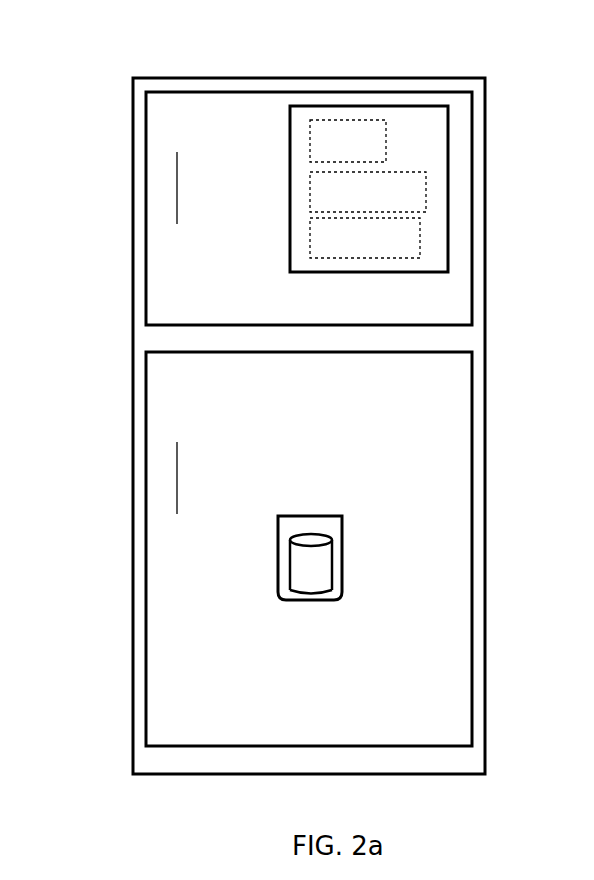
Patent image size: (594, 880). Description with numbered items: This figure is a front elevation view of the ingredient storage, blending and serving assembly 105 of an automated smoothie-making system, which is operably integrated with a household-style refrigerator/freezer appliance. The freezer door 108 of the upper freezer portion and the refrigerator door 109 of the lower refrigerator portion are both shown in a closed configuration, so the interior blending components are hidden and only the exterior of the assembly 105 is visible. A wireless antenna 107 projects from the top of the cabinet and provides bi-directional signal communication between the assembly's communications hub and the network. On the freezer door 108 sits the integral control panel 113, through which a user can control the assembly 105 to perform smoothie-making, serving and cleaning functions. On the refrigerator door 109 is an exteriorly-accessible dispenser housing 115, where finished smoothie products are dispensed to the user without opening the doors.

The ingredient storage, blending and serving assembly 105 is at (94, 54).
The wireless antenna 107 is at (310, 44).
The freezer door 108 is at (430, 316).
The refrigerator door 109 is at (426, 728).
The integral control panel 113 is at (448, 213).
The dispenser housing 115 is at (342, 552).